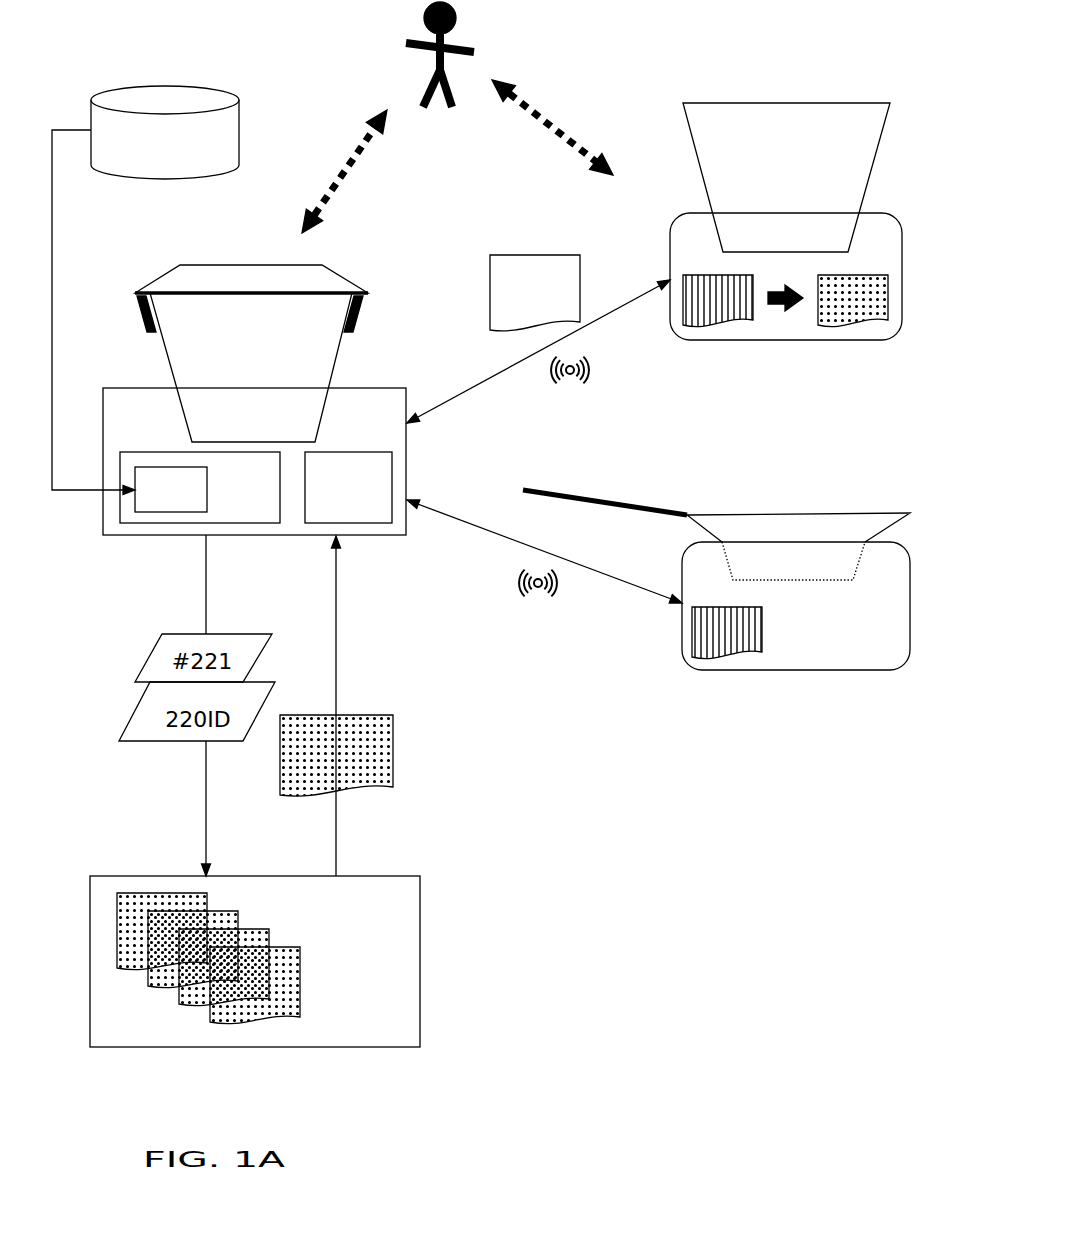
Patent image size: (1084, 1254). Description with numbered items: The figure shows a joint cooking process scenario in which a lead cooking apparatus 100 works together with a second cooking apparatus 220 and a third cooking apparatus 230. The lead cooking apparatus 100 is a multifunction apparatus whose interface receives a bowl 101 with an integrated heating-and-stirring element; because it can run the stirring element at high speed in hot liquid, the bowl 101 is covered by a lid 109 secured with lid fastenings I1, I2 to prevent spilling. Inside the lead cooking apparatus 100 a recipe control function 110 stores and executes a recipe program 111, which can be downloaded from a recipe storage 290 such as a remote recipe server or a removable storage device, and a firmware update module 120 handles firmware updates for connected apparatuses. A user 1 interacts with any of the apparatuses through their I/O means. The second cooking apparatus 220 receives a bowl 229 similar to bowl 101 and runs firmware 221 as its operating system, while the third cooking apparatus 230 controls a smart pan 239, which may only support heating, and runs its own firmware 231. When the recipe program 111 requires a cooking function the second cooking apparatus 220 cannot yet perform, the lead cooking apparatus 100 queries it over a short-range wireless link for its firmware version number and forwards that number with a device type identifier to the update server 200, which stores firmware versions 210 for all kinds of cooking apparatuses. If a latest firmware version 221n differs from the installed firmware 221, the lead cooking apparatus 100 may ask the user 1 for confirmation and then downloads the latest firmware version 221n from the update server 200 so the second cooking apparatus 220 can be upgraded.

The user 1 is at (412, 54).
The recipe storage 290 is at (146, 151).
The lid 109 is at (333, 269).
The bowl 101 is at (337, 362).
The lid fastening I1 is at (370, 312).
The lid fastening I2 is at (138, 318).
The lead cooking apparatus 100 is at (254, 490).
The recipe control function 110 is at (227, 514).
The recipe program 111 is at (151, 501).
The firmware update module 120 is at (338, 514).
The second cooking apparatus 220 is at (781, 254).
The bowl 229 is at (873, 178).
The firmware 221 is at (710, 325).
The latest firmware version 221n is at (512, 313).
The smart pan 239 is at (882, 510).
The third cooking apparatus 230 is at (723, 592).
The firmware 231 is at (762, 628).
The firmware versions 210 is at (307, 893).
The update server 200 is at (255, 961).